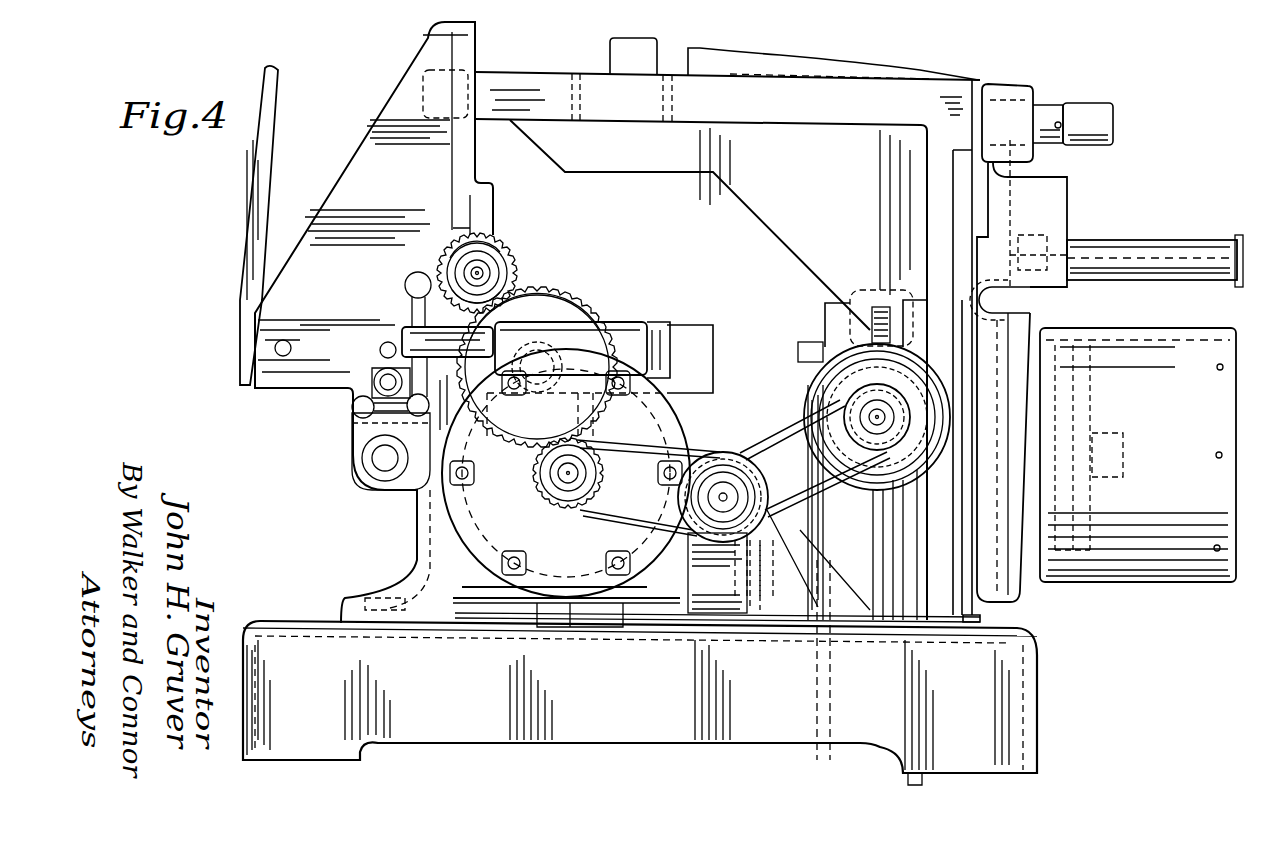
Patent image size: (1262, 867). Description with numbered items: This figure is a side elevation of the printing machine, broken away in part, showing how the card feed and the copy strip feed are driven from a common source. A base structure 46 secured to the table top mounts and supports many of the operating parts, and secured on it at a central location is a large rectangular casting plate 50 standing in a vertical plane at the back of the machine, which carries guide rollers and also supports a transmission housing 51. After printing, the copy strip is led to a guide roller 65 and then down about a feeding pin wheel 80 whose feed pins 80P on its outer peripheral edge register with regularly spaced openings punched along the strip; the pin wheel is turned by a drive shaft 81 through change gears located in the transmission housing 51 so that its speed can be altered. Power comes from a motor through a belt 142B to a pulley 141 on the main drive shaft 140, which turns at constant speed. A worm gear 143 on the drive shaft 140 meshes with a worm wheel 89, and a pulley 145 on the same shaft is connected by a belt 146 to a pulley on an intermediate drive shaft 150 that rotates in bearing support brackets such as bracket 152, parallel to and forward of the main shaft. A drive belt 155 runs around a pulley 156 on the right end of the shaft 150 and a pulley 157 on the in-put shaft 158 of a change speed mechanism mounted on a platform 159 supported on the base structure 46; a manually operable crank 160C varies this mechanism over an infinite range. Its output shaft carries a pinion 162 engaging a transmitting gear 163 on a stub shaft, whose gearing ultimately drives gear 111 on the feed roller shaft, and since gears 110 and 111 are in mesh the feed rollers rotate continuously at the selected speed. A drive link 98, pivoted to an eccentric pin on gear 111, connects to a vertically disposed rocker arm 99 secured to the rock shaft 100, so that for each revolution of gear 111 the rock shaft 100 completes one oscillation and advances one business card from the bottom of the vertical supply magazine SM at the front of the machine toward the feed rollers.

The supply magazine SM is at (355, 125).
The base structure 46 is at (432, 710).
The casting plate 50 is at (797, 235).
The transmission housing 51 is at (982, 95).
The guide roller 65 is at (1118, 243).
The pin wheel 80 is at (1137, 362).
The feed pins 80P is at (1218, 456).
The drive shaft 81 is at (1097, 447).
The worm wheel 89 is at (880, 300).
The drive link 98 is at (436, 409).
The rocker arm 99 is at (375, 432).
The rock shaft 100 is at (383, 462).
The gear 110 is at (505, 237).
The gear 111 is at (458, 318).
The main drive shaft 140 is at (880, 420).
The pulley 141 is at (817, 377).
The belt 142B is at (817, 753).
The worm gear 143 is at (806, 455).
The pulley 145 is at (913, 422).
The belt 146 is at (840, 470).
The intermediate drive shaft 150 is at (724, 494).
The bearing support bracket 152 is at (787, 597).
The drive belt 155 is at (612, 448).
The pulley 156 is at (713, 543).
The pulley 157 is at (545, 500).
The in-put shaft 158 is at (568, 478).
The platform 159 is at (503, 598).
The crank 160C is at (350, 404).
The pinion 162 is at (603, 458).
The transmitting gear 163 is at (563, 293).